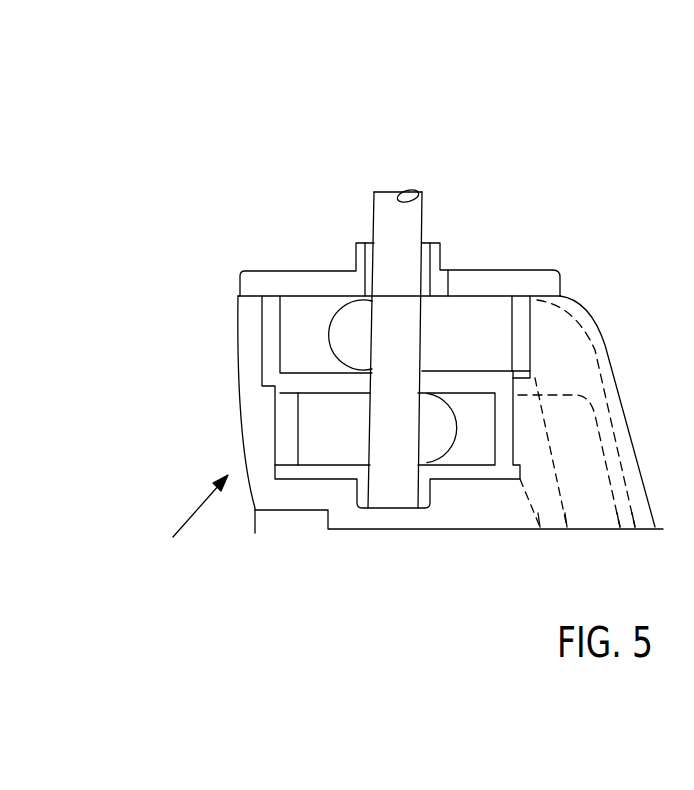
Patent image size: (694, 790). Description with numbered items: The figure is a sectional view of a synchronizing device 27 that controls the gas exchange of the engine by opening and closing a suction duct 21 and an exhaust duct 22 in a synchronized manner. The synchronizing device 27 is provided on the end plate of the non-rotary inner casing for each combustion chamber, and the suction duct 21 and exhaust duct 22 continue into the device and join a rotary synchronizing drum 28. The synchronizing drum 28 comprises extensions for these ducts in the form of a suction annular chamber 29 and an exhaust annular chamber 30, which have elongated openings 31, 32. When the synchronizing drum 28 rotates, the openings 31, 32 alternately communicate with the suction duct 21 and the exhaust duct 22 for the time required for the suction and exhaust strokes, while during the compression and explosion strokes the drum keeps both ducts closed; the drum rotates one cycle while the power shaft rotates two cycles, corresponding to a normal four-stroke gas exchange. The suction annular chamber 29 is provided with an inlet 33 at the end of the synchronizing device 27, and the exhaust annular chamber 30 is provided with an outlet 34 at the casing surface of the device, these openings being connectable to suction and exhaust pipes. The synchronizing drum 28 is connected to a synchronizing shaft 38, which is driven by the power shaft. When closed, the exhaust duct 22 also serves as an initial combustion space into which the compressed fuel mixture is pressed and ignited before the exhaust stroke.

The suction duct 21 is at (568, 370).
The exhaust duct 22 is at (550, 502).
The synchronizing device 27 is at (189, 523).
The synchronizing drum 28 is at (285, 285).
The suction annular chamber 29 is at (488, 338).
The exhaust annular chamber 30 is at (347, 448).
The elongated opening 31 is at (355, 328).
The elongated opening 32 is at (435, 440).
The inlet 33 is at (485, 282).
The outlet 34 is at (288, 430).
The synchronizing shaft 38 is at (395, 220).